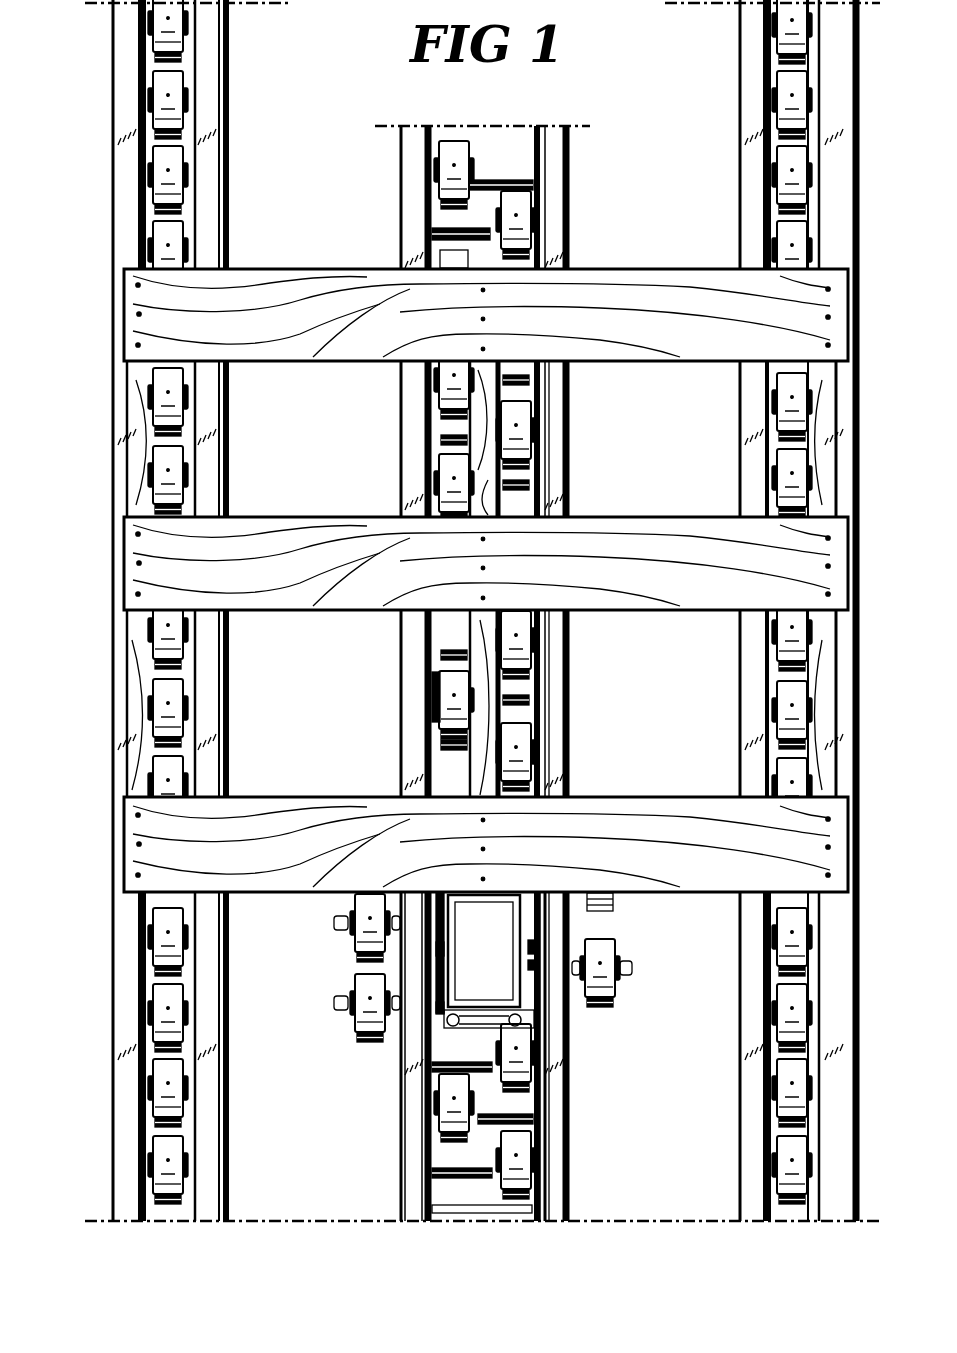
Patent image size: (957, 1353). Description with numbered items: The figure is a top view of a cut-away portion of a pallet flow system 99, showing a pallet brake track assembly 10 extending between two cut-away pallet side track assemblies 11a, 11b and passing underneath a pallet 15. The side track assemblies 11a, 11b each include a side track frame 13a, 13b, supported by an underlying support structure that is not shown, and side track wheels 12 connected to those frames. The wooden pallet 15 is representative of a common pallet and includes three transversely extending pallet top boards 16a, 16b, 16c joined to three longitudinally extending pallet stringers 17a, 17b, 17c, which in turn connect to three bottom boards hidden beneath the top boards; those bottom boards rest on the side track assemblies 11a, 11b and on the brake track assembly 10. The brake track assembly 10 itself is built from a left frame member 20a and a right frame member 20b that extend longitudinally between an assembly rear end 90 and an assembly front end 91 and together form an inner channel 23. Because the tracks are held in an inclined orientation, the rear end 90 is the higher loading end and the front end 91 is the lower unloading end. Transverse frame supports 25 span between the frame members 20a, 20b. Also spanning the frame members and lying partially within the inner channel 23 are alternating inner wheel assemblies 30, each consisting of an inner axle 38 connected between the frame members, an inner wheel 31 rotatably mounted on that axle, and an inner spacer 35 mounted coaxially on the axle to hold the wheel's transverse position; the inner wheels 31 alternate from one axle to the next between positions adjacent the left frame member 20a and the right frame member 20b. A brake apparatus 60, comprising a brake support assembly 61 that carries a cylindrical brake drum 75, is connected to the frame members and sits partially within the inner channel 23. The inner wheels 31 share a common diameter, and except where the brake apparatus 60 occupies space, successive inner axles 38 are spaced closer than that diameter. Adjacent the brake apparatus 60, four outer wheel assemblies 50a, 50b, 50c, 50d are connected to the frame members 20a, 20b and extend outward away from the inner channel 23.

The pallet flow system 99 is at (79, 150).
The pallet brake track assembly 10 is at (390, 200).
The assembly rear end 90 is at (415, 120).
The assembly front end 91 is at (436, 1228).
The inner channel 23 is at (497, 142).
The transverse frame supports 25 is at (546, 697).
The pallet side track assembly 11a is at (228, 116).
The pallet side track assembly 11b is at (737, 124).
The side track frame 13a is at (212, 95).
The side track frame 13b is at (752, 100).
The side track wheels 12 is at (172, 165).
The pallet 15 is at (486, 294).
The pallet top board 16a is at (318, 278).
The pallet top board 16b is at (322, 515).
The pallet top board 16c is at (330, 800).
The pallet stringer 17a is at (136, 415).
The pallet stringer 17b is at (428, 424).
The pallet stringer 17c is at (760, 432).
The left frame member 20a is at (424, 455).
The right frame member 20b is at (545, 445).
The alternating inner wheel assembly 30 is at (444, 701).
The inner wheel 31 is at (448, 690).
The inner axle 38 is at (424, 732).
The inner spacer 35 is at (546, 715).
The outer wheel assembly 50a is at (630, 901).
The outer wheel assembly 50b is at (345, 935).
The outer wheel assembly 50c is at (625, 982).
The outer wheel assembly 50d is at (345, 1015).
The brake apparatus 60 is at (432, 1010).
The brake support assembly 61 is at (555, 1060).
The brake drum 75 is at (500, 990).